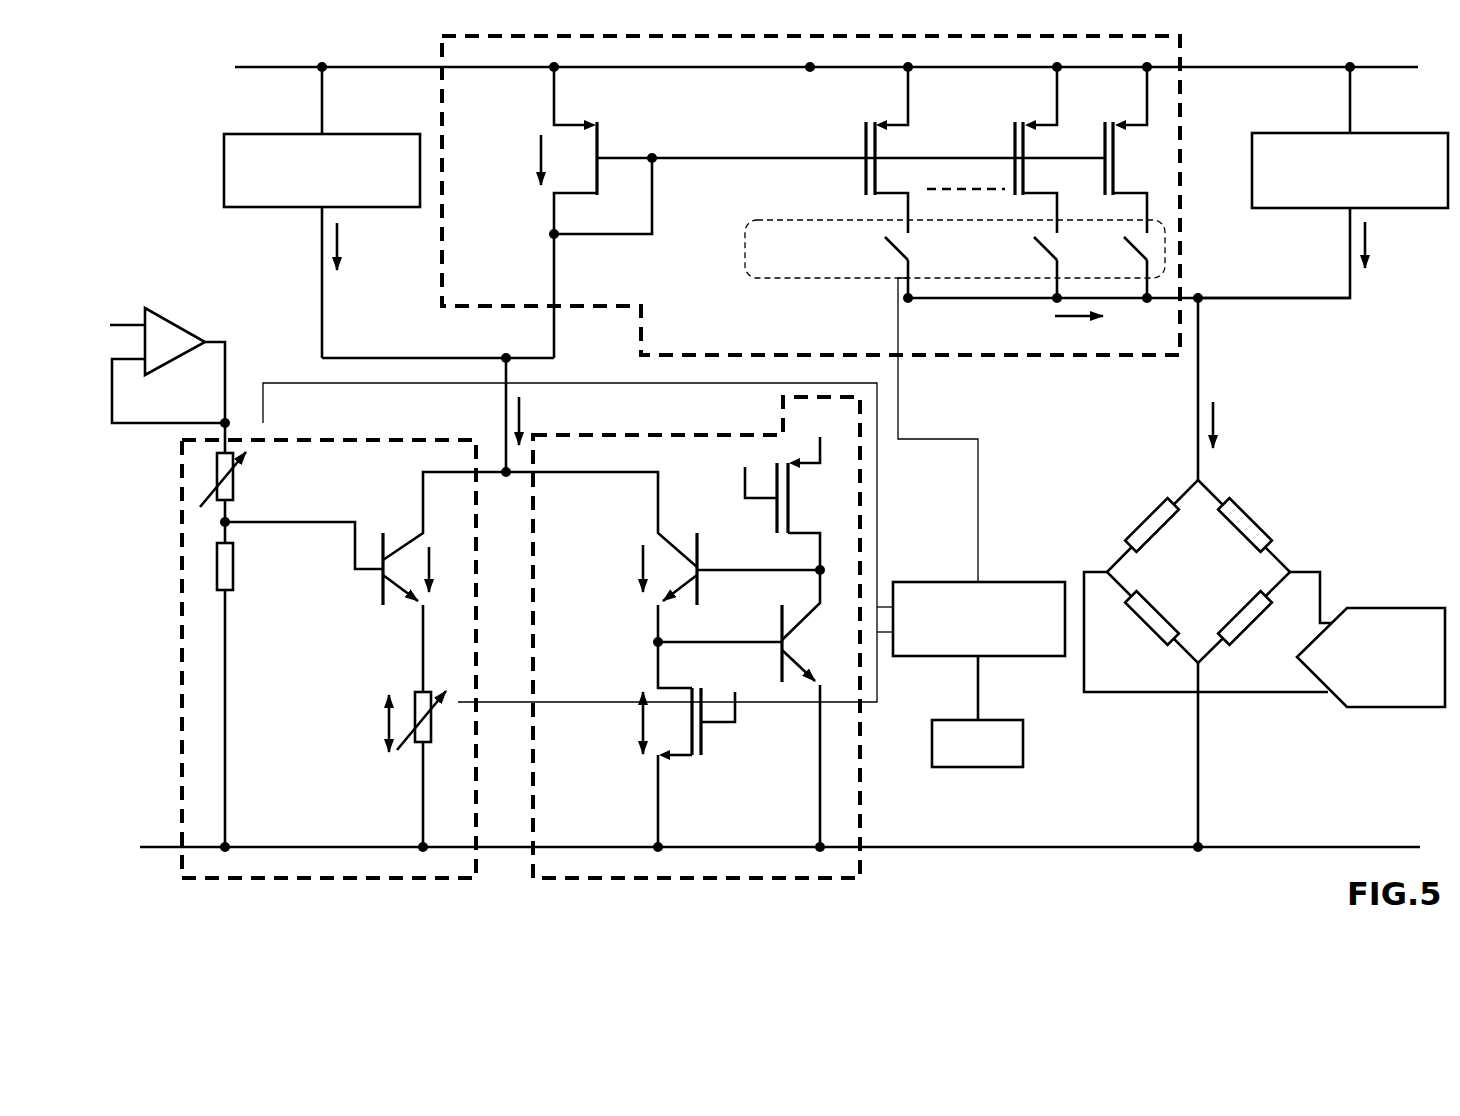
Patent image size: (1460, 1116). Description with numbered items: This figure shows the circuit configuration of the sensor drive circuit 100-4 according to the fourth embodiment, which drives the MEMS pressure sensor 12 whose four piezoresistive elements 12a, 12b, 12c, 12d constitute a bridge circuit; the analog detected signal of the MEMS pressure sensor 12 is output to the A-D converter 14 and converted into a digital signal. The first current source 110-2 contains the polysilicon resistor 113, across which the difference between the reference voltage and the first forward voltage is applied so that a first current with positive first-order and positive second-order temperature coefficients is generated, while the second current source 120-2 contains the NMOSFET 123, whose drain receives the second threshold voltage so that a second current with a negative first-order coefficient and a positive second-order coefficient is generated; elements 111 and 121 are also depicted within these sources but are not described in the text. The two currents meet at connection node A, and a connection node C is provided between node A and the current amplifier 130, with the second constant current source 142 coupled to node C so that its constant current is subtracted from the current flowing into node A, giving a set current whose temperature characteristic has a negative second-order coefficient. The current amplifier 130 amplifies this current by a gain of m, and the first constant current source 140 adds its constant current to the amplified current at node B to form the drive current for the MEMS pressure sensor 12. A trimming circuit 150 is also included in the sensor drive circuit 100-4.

The sensor drive circuit 100-4 is at (1450, 43).
The second constant current source 142 is at (410, 130).
The first constant current source 140 is at (1437, 130).
The current amplifier 130 is at (1185, 163).
The trimming circuit 150 is at (1053, 580).
The first current source 110-2 is at (344, 673).
The second current source 120-2 is at (683, 660).
The first bipolar transistor 111 is at (366, 594).
The polysilicon resistor 113 is at (386, 788).
The second bipolar transistor 121 is at (769, 624).
The NMOSFET 123 is at (675, 780).
The MEMS pressure sensor 12 is at (1231, 582).
The piezoresistive element 12a is at (1141, 518).
The piezoresistive element 12b is at (1257, 511).
The piezoresistive element 12c is at (1238, 643).
The piezoresistive element 12d is at (1143, 625).
The A-D converter 14 is at (1398, 607).